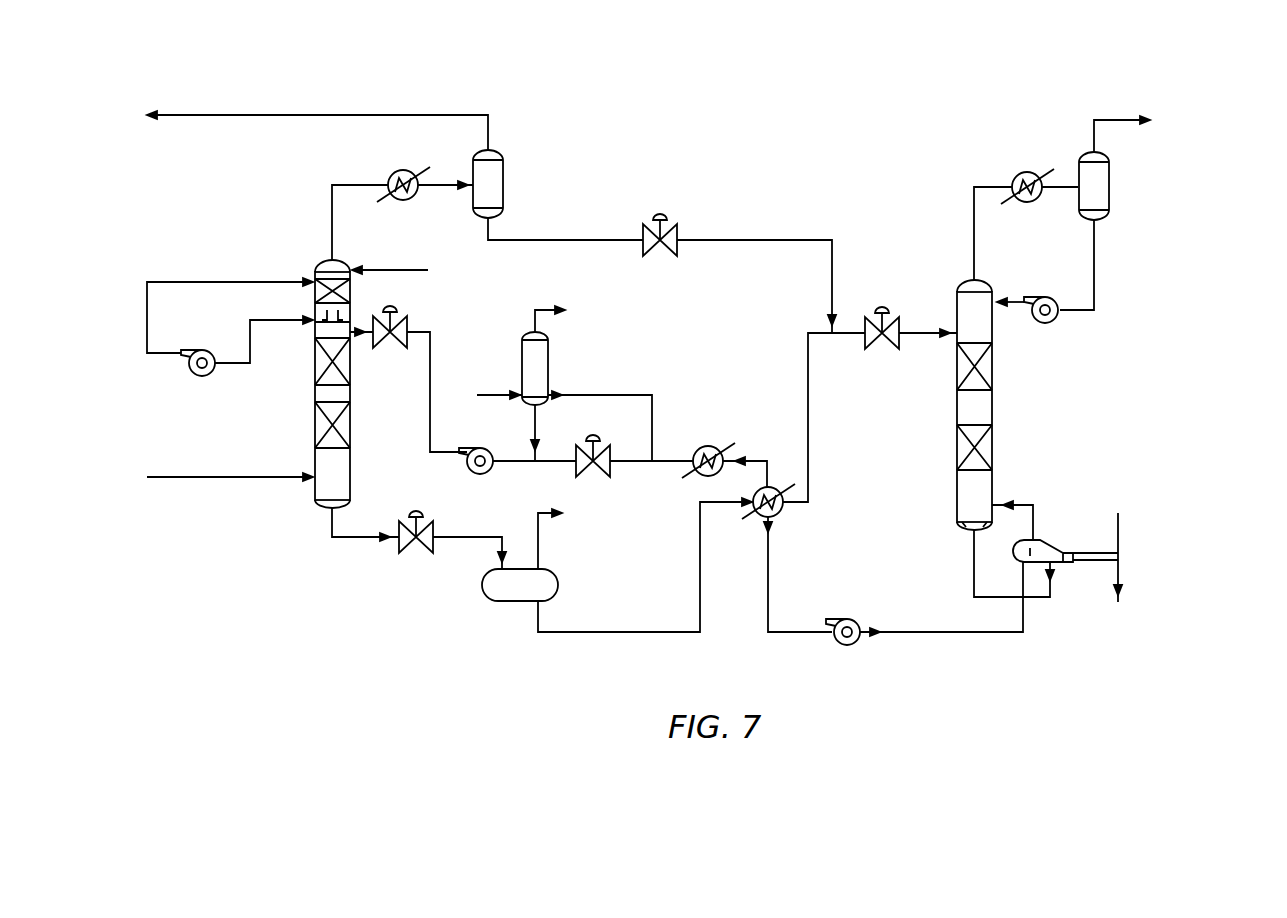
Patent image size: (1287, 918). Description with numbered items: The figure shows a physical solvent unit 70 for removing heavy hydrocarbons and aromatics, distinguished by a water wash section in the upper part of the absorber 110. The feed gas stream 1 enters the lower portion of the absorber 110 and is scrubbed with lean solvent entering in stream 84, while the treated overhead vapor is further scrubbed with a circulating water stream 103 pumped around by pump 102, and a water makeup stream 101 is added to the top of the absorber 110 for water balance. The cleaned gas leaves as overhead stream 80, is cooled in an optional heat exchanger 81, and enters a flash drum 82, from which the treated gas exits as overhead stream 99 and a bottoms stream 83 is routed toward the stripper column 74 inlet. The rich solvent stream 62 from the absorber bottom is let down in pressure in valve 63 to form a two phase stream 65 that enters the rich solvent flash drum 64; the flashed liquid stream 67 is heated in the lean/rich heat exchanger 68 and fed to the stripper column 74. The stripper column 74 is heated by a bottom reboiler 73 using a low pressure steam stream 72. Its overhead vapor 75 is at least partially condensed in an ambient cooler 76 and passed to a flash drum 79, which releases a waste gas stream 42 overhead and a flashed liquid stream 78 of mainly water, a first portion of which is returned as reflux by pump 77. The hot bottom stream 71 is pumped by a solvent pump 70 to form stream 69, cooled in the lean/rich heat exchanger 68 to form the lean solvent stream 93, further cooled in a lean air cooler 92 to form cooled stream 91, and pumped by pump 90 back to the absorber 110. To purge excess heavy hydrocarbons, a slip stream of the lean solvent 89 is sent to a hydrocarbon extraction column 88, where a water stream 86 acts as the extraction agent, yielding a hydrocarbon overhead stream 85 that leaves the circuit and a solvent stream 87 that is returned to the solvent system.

The feed gas stream 1 is at (193, 478).
The waste gas stream 42 is at (1093, 120).
The rich solvent stream 62 is at (340, 537).
The valve 63 is at (416, 554).
The rich solvent flash drum 64 is at (560, 581).
The two phase stream 65 is at (463, 537).
The flashed liquid stream 67 is at (616, 632).
The lean/rich heat exchanger 68 is at (781, 516).
The stream 69 is at (767, 632).
The solvent pump 70 is at (860, 645).
The bottom stream 71 is at (950, 632).
The low pressure steam stream 72 is at (1118, 549).
The bottom reboiler 73 is at (1046, 540).
The stripper column 74 is at (993, 430).
The overhead vapor 75 is at (974, 187).
The ambient cooler 76 is at (1027, 172).
The pump 77 is at (1045, 325).
The flashed liquid stream 78 is at (1094, 315).
The flash drum 79 is at (1110, 187).
The overhead stream 80 is at (332, 185).
The heat exchanger 81 is at (398, 170).
The flash drum 82 is at (505, 176).
The bottoms stream 83 is at (548, 240).
The lean solvent 84 is at (432, 332).
The hydrocarbon overhead stream 85 is at (535, 308).
The water stream 86 is at (480, 395).
The solvent stream 87 is at (527, 432).
The hydrocarbon extraction column 88 is at (550, 347).
The slip stream of the lean solvent 89 is at (620, 395).
The pump 90 is at (480, 474).
The cooled stream 91 is at (514, 462).
The lean air cooler 92 is at (708, 446).
The lean solvent stream 93 is at (767, 461).
The overhead stream 99 is at (330, 115).
The water makeup stream 101 is at (395, 270).
The pump 102 is at (214, 373).
The circulating water stream 103 is at (250, 320).
The absorber 110 is at (350, 486).